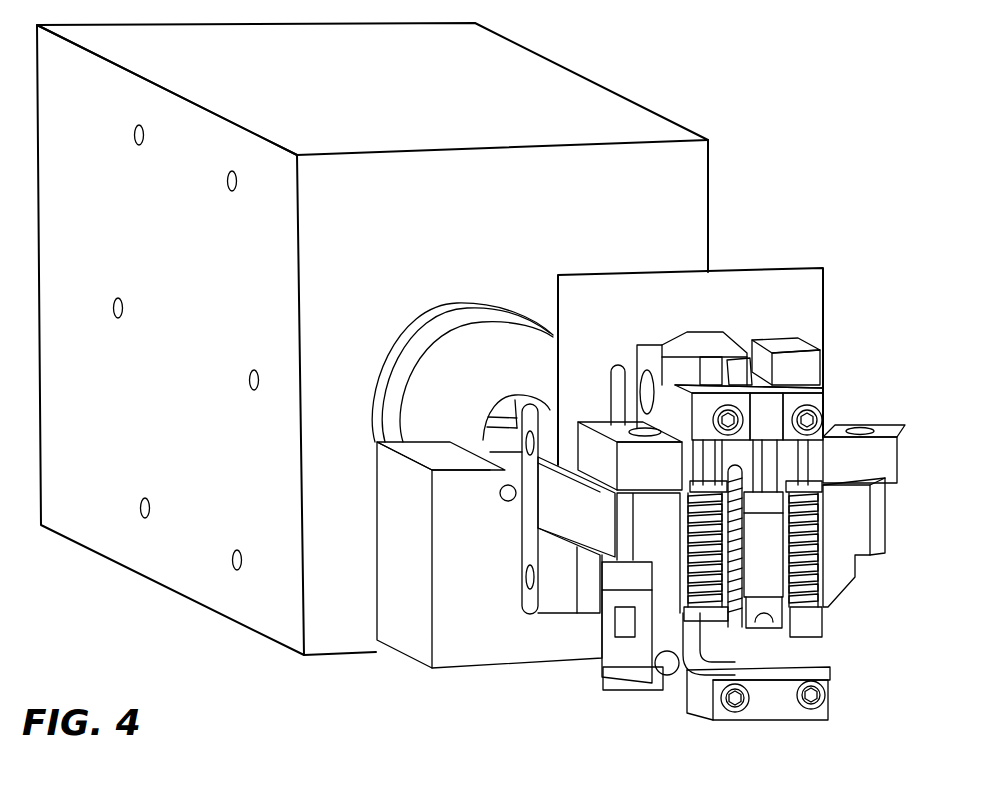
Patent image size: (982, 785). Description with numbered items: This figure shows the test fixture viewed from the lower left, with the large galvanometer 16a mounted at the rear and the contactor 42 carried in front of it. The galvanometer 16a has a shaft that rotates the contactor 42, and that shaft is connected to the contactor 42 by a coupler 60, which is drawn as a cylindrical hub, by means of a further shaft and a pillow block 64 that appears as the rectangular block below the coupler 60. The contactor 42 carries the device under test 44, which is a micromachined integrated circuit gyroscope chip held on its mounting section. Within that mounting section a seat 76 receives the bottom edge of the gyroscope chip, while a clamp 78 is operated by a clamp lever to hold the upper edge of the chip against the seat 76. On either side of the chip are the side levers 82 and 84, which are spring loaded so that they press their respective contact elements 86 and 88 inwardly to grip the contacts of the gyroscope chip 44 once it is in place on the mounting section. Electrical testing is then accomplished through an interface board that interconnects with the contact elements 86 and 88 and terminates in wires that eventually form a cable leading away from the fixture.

The galvanometer 16a is at (578, 100).
The contactor 42 is at (782, 116).
The coupler 60 is at (423, 347).
The pillow block 64 is at (398, 578).
The side lever 84 is at (560, 504).
The clamp 78 is at (763, 474).
The side lever 82 is at (880, 518).
The contact element 86 is at (826, 623).
The device under test 44 is at (780, 564).
The contact element 88 is at (688, 630).
The seat 76 is at (775, 618).